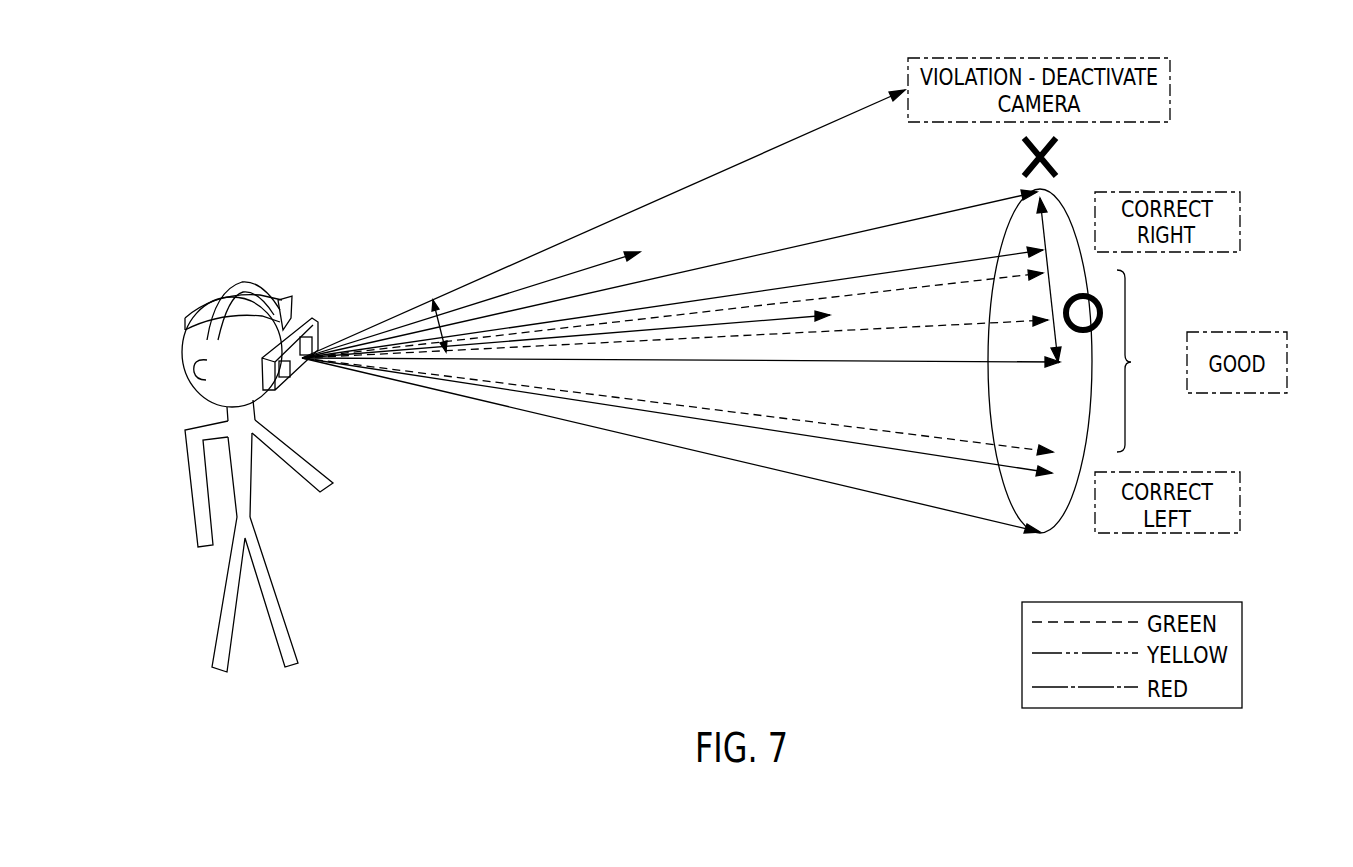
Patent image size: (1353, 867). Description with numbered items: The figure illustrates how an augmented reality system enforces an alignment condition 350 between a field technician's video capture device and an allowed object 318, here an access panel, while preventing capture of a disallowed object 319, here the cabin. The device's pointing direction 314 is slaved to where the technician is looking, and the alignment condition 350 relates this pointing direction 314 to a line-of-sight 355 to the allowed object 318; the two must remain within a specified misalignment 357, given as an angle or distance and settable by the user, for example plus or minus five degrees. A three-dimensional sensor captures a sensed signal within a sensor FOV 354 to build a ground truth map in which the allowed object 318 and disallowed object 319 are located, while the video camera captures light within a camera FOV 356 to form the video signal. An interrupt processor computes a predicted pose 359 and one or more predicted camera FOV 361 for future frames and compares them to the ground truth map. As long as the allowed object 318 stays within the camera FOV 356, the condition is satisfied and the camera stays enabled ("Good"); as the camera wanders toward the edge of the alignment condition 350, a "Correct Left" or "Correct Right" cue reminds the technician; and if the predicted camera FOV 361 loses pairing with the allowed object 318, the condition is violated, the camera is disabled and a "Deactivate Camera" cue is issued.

The pointing direction 314 is at (753, 362).
The allowed object 318 is at (1055, 347).
The disallowed object 319 is at (1059, 156).
The alignment condition 350 is at (1007, 503).
The sensor FOV 354 is at (937, 462).
The line-of-sight 355 is at (980, 323).
The camera FOV 356 is at (1146, 361).
The misalignment 357 is at (1043, 237).
The predicted pose 359 is at (575, 270).
The predicted camera FOV 361 is at (447, 323).